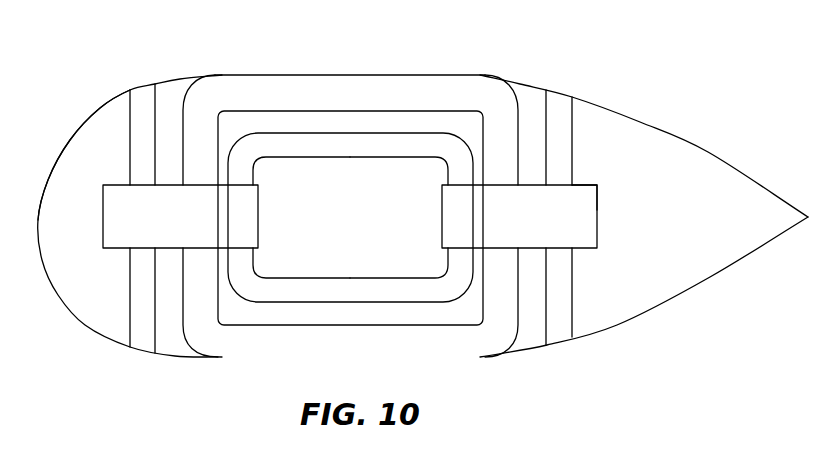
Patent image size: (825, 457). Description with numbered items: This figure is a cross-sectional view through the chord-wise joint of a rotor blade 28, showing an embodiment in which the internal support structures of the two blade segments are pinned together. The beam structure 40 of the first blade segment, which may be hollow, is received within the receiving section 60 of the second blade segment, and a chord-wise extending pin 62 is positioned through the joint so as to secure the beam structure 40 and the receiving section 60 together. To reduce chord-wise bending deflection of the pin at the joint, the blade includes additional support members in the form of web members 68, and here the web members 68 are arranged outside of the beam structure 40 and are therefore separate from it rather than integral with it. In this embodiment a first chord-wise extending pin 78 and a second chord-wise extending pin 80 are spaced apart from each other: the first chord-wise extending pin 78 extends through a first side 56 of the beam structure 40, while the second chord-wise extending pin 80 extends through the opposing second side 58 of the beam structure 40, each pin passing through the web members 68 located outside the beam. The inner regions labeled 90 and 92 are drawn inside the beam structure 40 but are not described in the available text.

The rotor blade 28 is at (708, 152).
The beam structure 40 is at (418, 130).
The first side 56 is at (183, 296).
The second side 58 is at (520, 277).
The receiving section 60 is at (325, 73).
The chord-wise extending pin 62 is at (118, 252).
The web member 68 is at (128, 132).
The first chord-wise extending pin 78 is at (115, 183).
The second chord-wise extending pin 80 is at (590, 185).
The first inner passage 90 is at (260, 227).
The second inner passage 92 is at (443, 213).